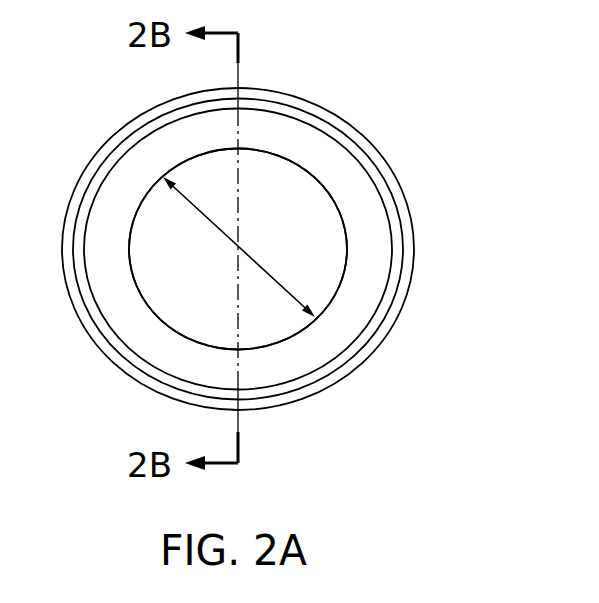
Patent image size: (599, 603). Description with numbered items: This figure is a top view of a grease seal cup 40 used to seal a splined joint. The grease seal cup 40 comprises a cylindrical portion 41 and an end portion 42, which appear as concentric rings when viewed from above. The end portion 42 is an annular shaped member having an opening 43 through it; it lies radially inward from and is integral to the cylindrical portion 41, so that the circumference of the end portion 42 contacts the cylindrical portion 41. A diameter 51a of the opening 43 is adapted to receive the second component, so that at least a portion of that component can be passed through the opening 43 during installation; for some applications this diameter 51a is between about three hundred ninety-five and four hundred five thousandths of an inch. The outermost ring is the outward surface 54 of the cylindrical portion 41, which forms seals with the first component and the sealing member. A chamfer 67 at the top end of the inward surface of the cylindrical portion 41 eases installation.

The grease seal cup 40 is at (424, 106).
The cylindrical portion 41 is at (393, 300).
The end portion 42 is at (362, 188).
The opening 43 is at (297, 210).
The diameter of the opening 51a is at (210, 223).
The outward surface 54 is at (105, 140).
The chamfer 67 is at (293, 110).